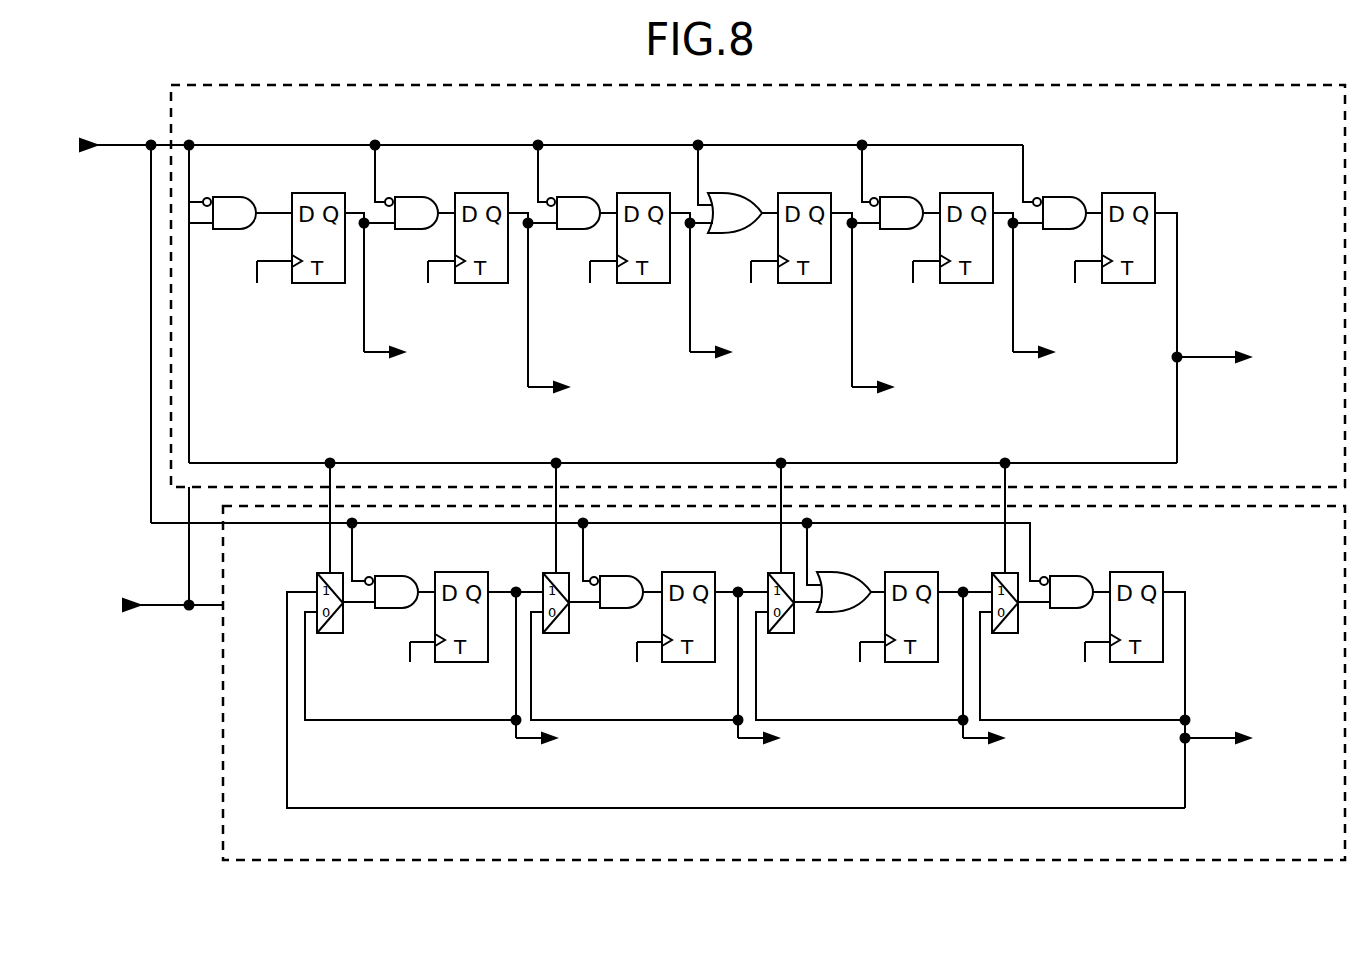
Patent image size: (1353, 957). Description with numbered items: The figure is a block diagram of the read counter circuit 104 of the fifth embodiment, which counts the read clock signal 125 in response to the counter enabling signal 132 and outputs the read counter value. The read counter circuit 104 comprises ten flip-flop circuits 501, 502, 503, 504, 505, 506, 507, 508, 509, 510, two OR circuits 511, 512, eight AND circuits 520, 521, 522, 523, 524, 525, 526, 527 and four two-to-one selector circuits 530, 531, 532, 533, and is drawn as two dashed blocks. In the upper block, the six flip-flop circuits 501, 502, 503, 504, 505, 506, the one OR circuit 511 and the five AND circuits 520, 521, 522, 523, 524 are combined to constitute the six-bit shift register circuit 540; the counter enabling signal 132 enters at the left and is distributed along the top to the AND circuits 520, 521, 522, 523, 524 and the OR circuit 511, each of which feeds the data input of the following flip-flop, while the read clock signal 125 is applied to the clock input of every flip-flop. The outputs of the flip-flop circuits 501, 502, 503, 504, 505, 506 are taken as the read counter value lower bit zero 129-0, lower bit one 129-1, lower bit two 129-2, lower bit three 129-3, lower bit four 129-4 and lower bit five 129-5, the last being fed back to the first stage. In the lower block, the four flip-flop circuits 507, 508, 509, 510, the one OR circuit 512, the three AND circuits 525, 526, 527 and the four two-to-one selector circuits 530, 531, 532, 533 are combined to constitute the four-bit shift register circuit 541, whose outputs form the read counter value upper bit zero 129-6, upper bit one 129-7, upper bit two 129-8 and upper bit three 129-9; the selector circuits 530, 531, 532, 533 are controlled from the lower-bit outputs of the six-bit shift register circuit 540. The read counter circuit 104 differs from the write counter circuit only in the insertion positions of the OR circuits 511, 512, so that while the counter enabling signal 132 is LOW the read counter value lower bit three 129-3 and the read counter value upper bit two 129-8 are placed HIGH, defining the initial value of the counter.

The read counter circuit 104 is at (915, 70).
The 6-bit shift register circuit 540 is at (170, 110).
The 4-bit shift register circuit 541 is at (224, 828).
The flip-flop circuit 501 is at (326, 192).
The flip-flop circuit 502 is at (491, 191).
The flip-flop circuit 503 is at (651, 191).
The flip-flop circuit 504 is at (811, 191).
The flip-flop circuit 505 is at (974, 191).
The flip-flop circuit 506 is at (1134, 191).
The flip-flop circuit 507 is at (451, 571).
The flip-flop circuit 508 is at (679, 571).
The flip-flop circuit 509 is at (903, 571).
The flip-flop circuit 510 is at (1144, 571).
The OR circuit 511 is at (736, 194).
The OR circuit 512 is at (844, 573).
The AND circuit 520 is at (236, 196).
The AND circuit 521 is at (416, 196).
The AND circuit 522 is at (579, 196).
The AND circuit 523 is at (901, 196).
The AND circuit 524 is at (1064, 196).
The AND circuit 525 is at (394, 575).
The AND circuit 526 is at (621, 575).
The AND circuit 527 is at (1073, 575).
The 2-to-1 selector circuit 530 is at (317, 574).
The 2-to-1 selector circuit 531 is at (543, 574).
The 2-to-1 selector circuit 532 is at (768, 574).
The 2-to-1 selector circuit 533 is at (992, 574).
The read clock signal 125 is at (606, 486).
The counter enabling signal 132 is at (526, 331).
The read counter value-lower bit [0] 129-0 is at (400, 375).
The read counter value-lower bit [1] 129-1 is at (575, 416).
The read counter value-lower bit [2] 129-2 is at (727, 375).
The read counter value-lower bit [3] 129-3 is at (899, 416).
The read counter value-lower bit [4] 129-4 is at (1050, 375).
The read counter value-lower bit [5] 129-5 is at (1253, 402).
The read counter value-upper bit [0] 129-6 is at (520, 763).
The read counter value-upper bit [1] 129-7 is at (764, 764).
The read counter value-upper bit [2] 129-8 is at (1005, 764).
The read counter value-upper bit [3] 129-9 is at (1260, 782).